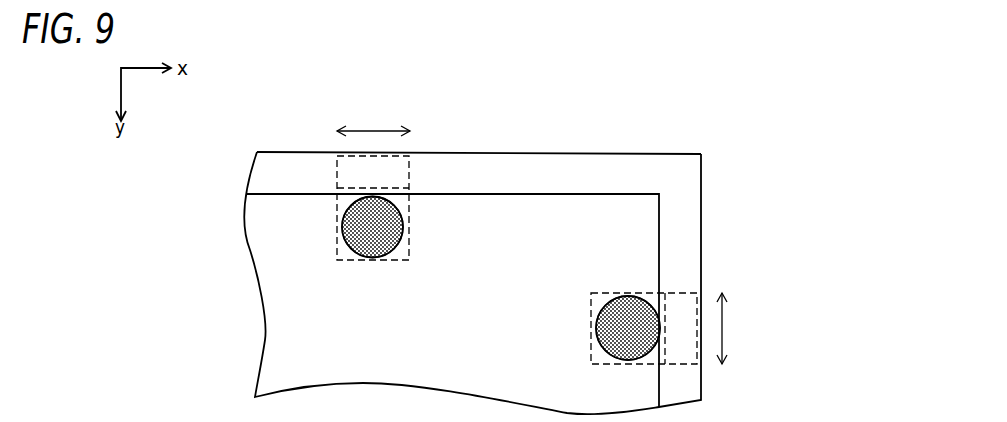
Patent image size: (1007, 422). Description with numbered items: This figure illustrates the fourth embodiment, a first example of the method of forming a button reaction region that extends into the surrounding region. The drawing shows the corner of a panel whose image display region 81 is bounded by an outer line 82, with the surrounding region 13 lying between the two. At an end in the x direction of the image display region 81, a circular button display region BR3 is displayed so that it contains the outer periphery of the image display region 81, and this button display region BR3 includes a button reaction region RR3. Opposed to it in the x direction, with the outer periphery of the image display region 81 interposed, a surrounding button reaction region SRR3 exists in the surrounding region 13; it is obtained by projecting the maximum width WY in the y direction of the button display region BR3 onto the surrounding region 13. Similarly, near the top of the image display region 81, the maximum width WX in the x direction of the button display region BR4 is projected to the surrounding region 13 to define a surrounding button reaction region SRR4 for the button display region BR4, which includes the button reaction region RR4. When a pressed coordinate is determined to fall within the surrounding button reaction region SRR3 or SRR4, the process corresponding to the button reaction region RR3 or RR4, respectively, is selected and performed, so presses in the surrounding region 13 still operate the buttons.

The surrounding region 13 is at (679, 170).
The image display region 81 is at (627, 192).
The outer edge line 82 is at (565, 151).
The button reaction region RR3 is at (631, 292).
The surrounding button reaction region SRR3 is at (682, 292).
The button display region BR3 is at (627, 333).
The button reaction region RR4 is at (340, 226).
The surrounding button reaction region SRR4 is at (337, 177).
The button display region BR4 is at (382, 228).
The maximum width in the x direction WX is at (373, 115).
The maximum width in the y direction WY is at (742, 328).